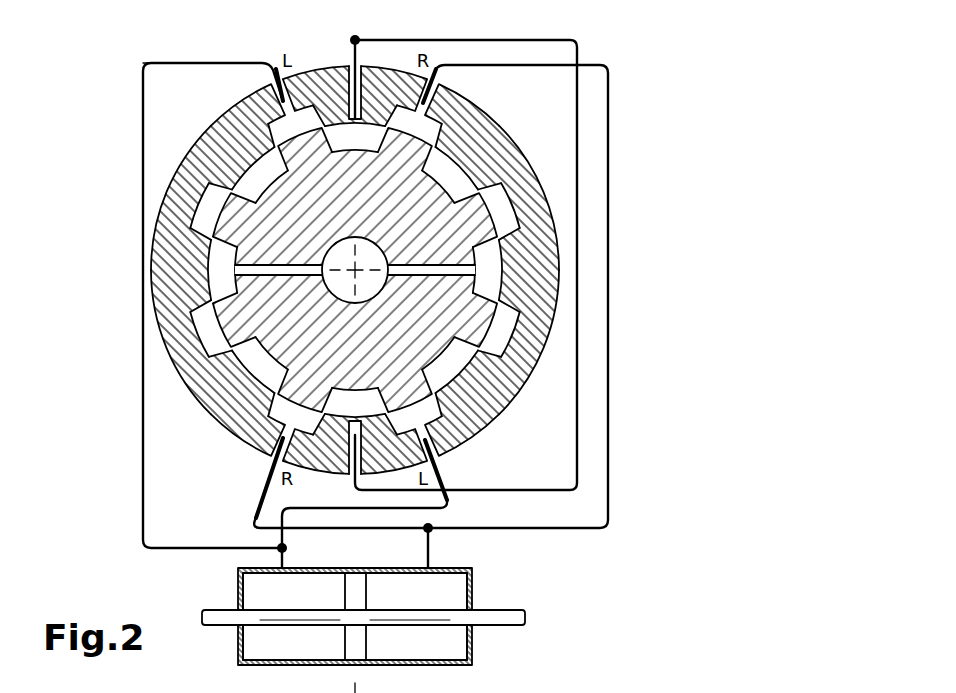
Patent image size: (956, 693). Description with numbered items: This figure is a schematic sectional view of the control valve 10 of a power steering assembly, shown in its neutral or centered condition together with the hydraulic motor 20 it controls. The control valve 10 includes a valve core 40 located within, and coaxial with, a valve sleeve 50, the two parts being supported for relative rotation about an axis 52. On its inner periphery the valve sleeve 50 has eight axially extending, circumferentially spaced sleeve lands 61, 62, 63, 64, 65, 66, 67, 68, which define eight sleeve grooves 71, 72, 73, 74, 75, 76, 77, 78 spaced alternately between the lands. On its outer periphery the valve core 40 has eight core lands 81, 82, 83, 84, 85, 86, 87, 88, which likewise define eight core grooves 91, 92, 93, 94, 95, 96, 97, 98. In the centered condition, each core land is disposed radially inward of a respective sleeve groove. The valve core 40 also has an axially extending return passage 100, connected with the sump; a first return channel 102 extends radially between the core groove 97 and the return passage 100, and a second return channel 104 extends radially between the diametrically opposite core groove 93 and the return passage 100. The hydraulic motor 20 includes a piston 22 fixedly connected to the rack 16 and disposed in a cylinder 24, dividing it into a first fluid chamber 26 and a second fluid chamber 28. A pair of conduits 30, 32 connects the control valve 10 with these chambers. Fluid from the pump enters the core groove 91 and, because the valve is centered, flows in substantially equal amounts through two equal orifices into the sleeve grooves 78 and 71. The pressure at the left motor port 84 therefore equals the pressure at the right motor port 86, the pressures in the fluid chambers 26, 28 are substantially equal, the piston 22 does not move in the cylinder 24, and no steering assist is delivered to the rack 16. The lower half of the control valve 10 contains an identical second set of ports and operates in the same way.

The control valve 10 is at (678, 116).
The rack 16 is at (493, 612).
The hydraulic motor 20 is at (397, 622).
The piston 22 is at (353, 633).
The cylinder 24 is at (238, 592).
The first fluid chamber 26 is at (277, 645).
The second fluid chamber 28 is at (452, 642).
The conduit 30 is at (143, 486).
The conduit 32 is at (608, 505).
The valve core 40 is at (480, 288).
The valve sleeve 50 is at (236, 88).
The axis 52 is at (355, 272).
The sleeve land 61 is at (390, 70).
The sleeve land 62 is at (463, 158).
The sleeve land 63 is at (510, 275).
The sleeve land 64 is at (478, 418).
The sleeve land 65 is at (352, 490).
The sleeve land 66 is at (232, 430).
The sleeve land 67 is at (195, 278).
The sleeve land 68 is at (237, 167).
The sleeve groove 71 is at (442, 108).
The sleeve groove 72 is at (477, 220).
The sleeve groove 73 is at (507, 343).
The sleeve groove 74 is at (457, 443).
The sleeve groove 75 is at (278, 420).
The sleeve groove 76 is at (203, 337).
The sleeve groove 77 is at (200, 212).
The sleeve groove 78 is at (312, 72).
The core land 81 is at (411, 147).
The core land 82 is at (518, 218).
The core land 83 is at (482, 323).
The core land 84 is at (403, 393).
The core land 85 is at (300, 393).
The core land 86 is at (230, 317).
The core land 87 is at (226, 212).
The core land 88 is at (302, 147).
The core groove 91 is at (355, 135).
The core groove 92 is at (455, 185).
The core groove 93 is at (488, 258).
The core groove 94 is at (498, 390).
The core groove 95 is at (342, 397).
The core groove 96 is at (262, 364).
The core groove 97 is at (223, 260).
The core groove 98 is at (270, 167).
The return passage 100 is at (352, 244).
The first return channel 102 is at (272, 267).
The second return channel 104 is at (403, 265).